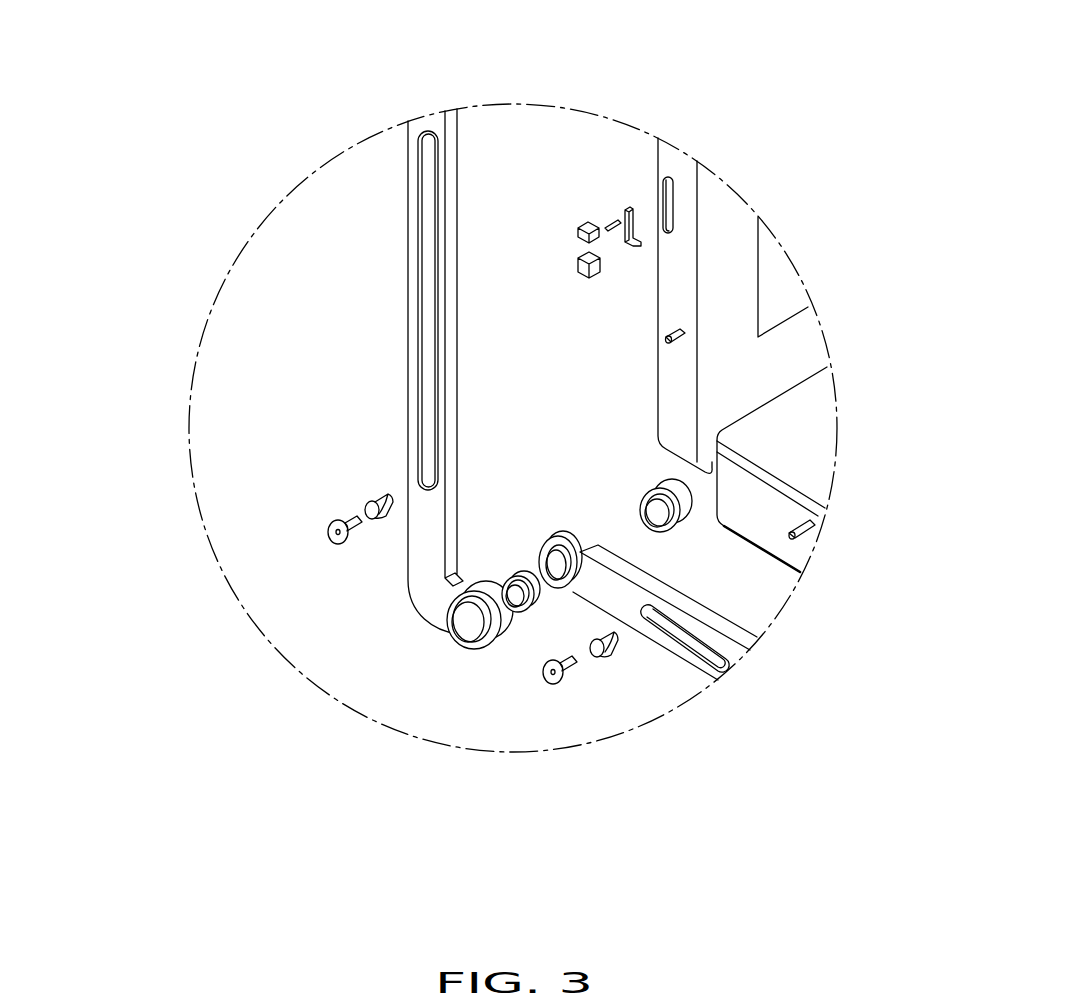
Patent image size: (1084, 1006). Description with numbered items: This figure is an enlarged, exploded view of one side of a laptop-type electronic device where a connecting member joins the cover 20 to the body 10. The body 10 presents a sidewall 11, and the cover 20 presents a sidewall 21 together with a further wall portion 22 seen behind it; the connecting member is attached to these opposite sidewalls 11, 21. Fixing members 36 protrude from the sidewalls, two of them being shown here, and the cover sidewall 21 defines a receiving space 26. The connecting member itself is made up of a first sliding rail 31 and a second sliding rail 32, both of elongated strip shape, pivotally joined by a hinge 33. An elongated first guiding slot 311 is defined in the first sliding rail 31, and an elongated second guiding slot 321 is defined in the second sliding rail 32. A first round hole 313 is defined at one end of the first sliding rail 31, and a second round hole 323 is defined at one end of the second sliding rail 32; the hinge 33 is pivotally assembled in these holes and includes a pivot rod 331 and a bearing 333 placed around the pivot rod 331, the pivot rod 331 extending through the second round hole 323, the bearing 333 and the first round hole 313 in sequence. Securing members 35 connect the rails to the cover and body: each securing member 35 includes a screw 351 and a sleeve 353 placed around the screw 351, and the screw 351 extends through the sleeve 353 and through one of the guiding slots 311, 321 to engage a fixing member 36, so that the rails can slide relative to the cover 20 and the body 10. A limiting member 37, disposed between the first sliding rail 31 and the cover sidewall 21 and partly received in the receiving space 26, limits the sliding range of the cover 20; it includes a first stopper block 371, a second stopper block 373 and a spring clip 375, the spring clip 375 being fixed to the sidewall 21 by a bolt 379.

The body 10 is at (818, 469).
The sidewall 11 is at (765, 492).
The cover 20 is at (820, 277).
The sidewall 21 is at (751, 305).
The housing wall 22 is at (773, 303).
The receiving space 26 is at (672, 205).
The first sliding rail 31 is at (348, 439).
The first guiding slot 311 is at (432, 272).
The first round hole 313 is at (472, 628).
The second sliding rail 32 is at (599, 663).
The second guiding slot 321 is at (693, 642).
The second round hole 323 is at (567, 568).
The hinge 33 is at (680, 533).
The pivot rod 331 is at (665, 485).
The bearing 333 is at (520, 573).
The securing member 35 is at (541, 685).
The screw 351 is at (327, 533).
The sleeve 353 is at (373, 498).
The fixing member 36 is at (683, 338).
The limiting member 37 is at (572, 143).
The first stopper block 371 is at (583, 223).
The second stopper block 373 is at (580, 258).
The spring clip 375 is at (659, 150).
The bolt 379 is at (612, 222).